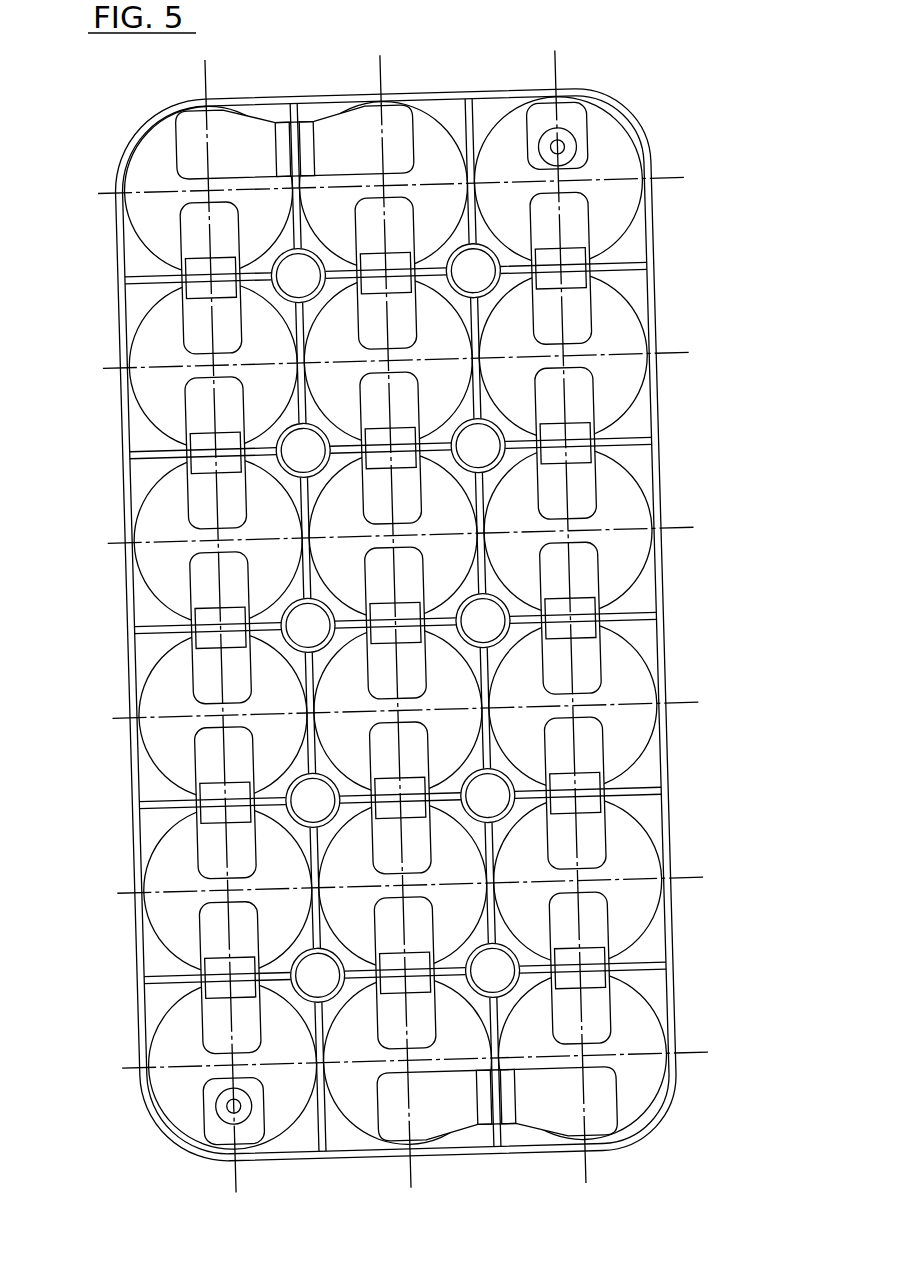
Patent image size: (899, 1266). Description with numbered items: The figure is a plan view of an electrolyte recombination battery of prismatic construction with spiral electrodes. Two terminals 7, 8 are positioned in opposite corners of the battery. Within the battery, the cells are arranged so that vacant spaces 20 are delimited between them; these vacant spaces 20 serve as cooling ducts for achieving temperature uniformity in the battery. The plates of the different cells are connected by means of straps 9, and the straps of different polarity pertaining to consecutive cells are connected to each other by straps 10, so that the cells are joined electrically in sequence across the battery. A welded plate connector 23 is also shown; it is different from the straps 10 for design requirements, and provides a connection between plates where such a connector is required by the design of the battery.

The terminal 7 is at (216, 1102).
The terminal 8 is at (563, 150).
The strap 9 is at (193, 322).
The strap 10 is at (201, 466).
The vacant space 20 is at (479, 446).
The welded plate connector 23 is at (353, 138).